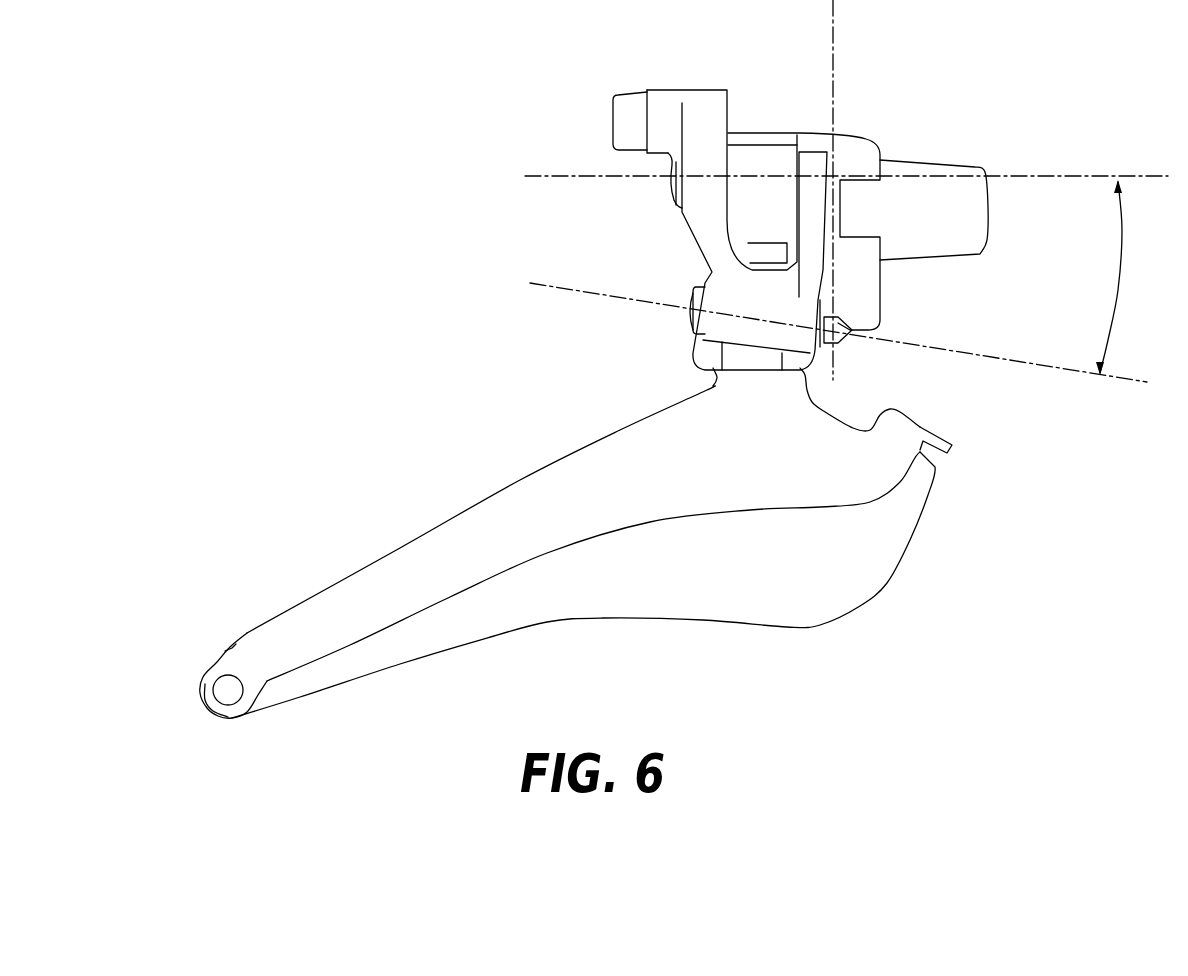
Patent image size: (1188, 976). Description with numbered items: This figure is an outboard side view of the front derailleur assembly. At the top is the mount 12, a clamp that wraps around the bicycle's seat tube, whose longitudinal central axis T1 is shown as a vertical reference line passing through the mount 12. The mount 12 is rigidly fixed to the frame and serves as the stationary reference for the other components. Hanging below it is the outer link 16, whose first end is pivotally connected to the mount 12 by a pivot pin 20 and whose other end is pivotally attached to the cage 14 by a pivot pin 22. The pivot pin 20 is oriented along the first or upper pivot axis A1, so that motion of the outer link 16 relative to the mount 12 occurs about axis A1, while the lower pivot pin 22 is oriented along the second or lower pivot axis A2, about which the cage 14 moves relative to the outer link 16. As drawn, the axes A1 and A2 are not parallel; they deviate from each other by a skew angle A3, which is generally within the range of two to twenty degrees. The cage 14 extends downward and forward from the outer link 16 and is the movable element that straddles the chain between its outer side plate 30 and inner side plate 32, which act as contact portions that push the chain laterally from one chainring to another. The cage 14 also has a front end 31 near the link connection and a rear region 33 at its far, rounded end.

The mount 12 is at (977, 237).
The cage 14 is at (738, 582).
The outer link 16 is at (737, 277).
The pivot pin 20 is at (670, 187).
The pivot pin 22 is at (688, 320).
The outer side plate 30 is at (430, 542).
The front end 31 is at (927, 427).
The inner side plate 32 is at (553, 610).
The rear region 33 is at (247, 633).
The longitudinal central axis T1 is at (833, 60).
The first or upper pivot axis A1 is at (567, 175).
The second or lower pivot axis A2 is at (542, 285).
The skew angle A3 is at (1128, 277).